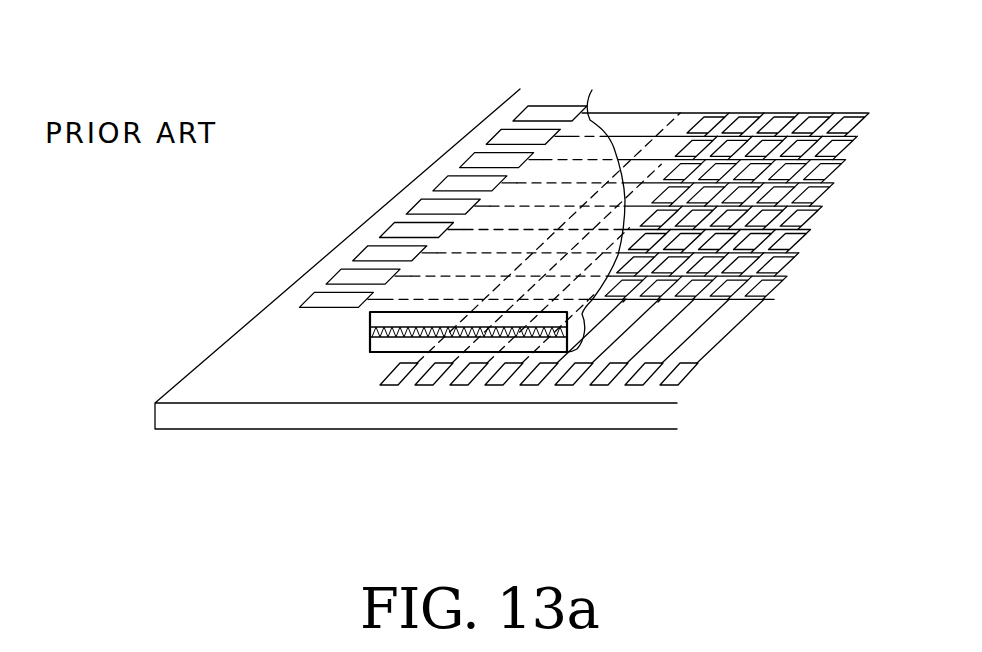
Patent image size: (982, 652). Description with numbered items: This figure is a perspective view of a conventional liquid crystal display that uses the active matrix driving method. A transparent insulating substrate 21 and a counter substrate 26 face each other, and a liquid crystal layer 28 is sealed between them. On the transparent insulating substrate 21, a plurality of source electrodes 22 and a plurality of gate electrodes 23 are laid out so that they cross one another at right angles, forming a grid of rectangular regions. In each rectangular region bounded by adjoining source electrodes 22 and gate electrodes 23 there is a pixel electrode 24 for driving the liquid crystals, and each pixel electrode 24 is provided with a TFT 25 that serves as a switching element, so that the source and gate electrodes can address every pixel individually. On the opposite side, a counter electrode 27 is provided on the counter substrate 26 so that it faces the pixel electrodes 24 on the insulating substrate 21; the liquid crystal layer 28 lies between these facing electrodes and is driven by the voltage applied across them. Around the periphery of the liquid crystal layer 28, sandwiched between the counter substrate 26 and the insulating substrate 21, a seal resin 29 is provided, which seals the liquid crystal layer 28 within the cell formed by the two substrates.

The transparent insulating substrate 21 is at (592, 418).
The source electrodes 22 is at (720, 308).
The gate electrodes 23 is at (728, 112).
The pixel electrode 24 is at (808, 195).
The TFT 25 is at (793, 237).
The counter substrate 26 is at (583, 114).
The counter electrode 27 is at (393, 353).
The liquid crystal layer 28 is at (517, 333).
The seal resin 29 is at (437, 345).